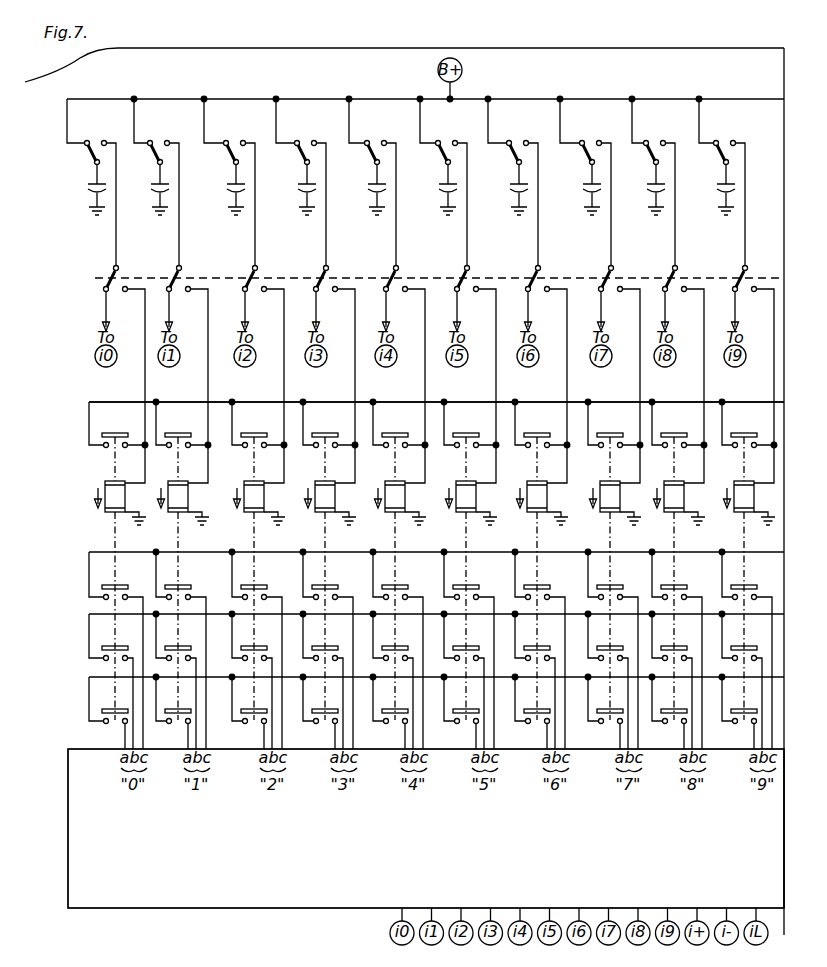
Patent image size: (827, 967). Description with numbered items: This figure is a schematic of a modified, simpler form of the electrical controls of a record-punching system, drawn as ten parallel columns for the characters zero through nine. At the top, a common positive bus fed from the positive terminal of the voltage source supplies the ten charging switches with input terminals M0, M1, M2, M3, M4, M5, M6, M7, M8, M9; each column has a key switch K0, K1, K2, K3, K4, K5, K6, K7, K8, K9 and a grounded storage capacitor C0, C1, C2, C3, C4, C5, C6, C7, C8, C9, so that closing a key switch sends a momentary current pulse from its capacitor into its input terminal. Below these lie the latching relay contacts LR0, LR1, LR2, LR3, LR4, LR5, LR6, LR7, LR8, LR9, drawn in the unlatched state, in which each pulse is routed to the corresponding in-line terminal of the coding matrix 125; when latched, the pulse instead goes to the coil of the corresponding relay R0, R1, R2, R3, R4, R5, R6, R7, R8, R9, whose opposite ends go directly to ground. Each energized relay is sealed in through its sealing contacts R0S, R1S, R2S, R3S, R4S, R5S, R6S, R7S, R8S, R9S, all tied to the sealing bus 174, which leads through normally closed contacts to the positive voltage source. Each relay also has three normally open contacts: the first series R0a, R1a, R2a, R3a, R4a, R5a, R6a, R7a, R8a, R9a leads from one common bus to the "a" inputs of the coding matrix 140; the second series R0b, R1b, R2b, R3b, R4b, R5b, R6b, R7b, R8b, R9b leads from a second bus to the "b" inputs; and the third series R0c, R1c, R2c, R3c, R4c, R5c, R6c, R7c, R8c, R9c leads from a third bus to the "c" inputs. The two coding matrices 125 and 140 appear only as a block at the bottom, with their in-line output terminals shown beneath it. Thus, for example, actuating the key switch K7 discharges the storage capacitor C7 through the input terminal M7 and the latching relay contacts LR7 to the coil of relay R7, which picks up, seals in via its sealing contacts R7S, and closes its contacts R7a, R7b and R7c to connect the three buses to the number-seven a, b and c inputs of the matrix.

The input terminal M0 is at (91, 182).
The input terminal M1 is at (155, 180).
The input terminal M2 is at (228, 180).
The input terminal M3 is at (299, 180).
The input terminal M4 is at (371, 180).
The input terminal M5 is at (442, 180).
The input terminal M6 is at (511, 180).
The input terminal M7 is at (584, 180).
The input terminal M8 is at (652, 180).
The input terminal M9 is at (720, 180).
The key switch K0 is at (68, 160).
The key switch K1 is at (137, 160).
The key switch K2 is at (213, 160).
The key switch K3 is at (284, 160).
The key switch K4 is at (354, 160).
The key switch K5 is at (425, 160).
The key switch K6 is at (496, 160).
The key switch K7 is at (569, 160).
The key switch K8 is at (633, 160).
The key switch K9 is at (703, 160).
The storage capacitor C0 is at (75, 190).
The storage capacitor C1 is at (143, 190).
The storage capacitor C2 is at (219, 190).
The storage capacitor C3 is at (290, 190).
The storage capacitor C4 is at (360, 190).
The storage capacitor C5 is at (431, 190).
The storage capacitor C6 is at (502, 190).
The storage capacitor C7 is at (575, 190).
The storage capacitor C8 is at (639, 190).
The storage capacitor C9 is at (709, 190).
The latching relay contacts LR0 is at (106, 366).
The latching relay contacts LR1 is at (170, 366).
The latching relay contacts LR2 is at (246, 366).
The latching relay contacts LR3 is at (317, 366).
The latching relay contacts LR4 is at (387, 366).
The latching relay contacts LR5 is at (458, 366).
The latching relay contacts LR6 is at (529, 366).
The latching relay contacts LR7 is at (602, 366).
The latching relay contacts LR8 is at (666, 366).
The latching relay contacts LR9 is at (736, 366).
The sealing contacts R0S is at (117, 425).
The sealing contacts R1S is at (180, 423).
The sealing contacts R2S is at (256, 423).
The sealing contacts R3S is at (327, 423).
The sealing contacts R4S is at (397, 423).
The sealing contacts R5S is at (468, 423).
The sealing contacts R6S is at (539, 423).
The sealing contacts R7S is at (612, 423).
The sealing contacts R8S is at (676, 423).
The sealing contacts R9S is at (746, 423).
The relay R0 is at (101, 506).
The relay R1 is at (175, 515).
The relay R2 is at (251, 515).
The relay R3 is at (322, 515).
The relay R4 is at (392, 515).
The relay R5 is at (463, 515).
The relay R6 is at (534, 515).
The relay R7 is at (607, 515).
The relay R8 is at (671, 515).
The relay R9 is at (741, 515).
The normally open relay contacts R0c is at (118, 650).
The normally open relay contacts R1c is at (182, 649).
The normally open relay contacts R2c is at (258, 649).
The normally open relay contacts R3c is at (329, 649).
The normally open relay contacts R4c is at (399, 649).
The normally open relay contacts R5c is at (470, 649).
The normally open relay contacts R6c is at (541, 649).
The normally open relay contacts R7c is at (614, 649).
The normally open relay contacts R8c is at (678, 649).
The normally open relay contacts R9c is at (748, 649).
The normally open relay contacts R0b is at (91, 681).
The normally open relay contacts R1b is at (173, 680).
The normally open relay contacts R2b is at (249, 680).
The normally open relay contacts R3b is at (320, 680).
The normally open relay contacts R4b is at (390, 680).
The normally open relay contacts R5b is at (461, 680).
The normally open relay contacts R6b is at (532, 680).
The normally open relay contacts R7b is at (605, 680).
The normally open relay contacts R8b is at (669, 680).
The normally open relay contacts R9b is at (739, 680).
The normally open relay contacts R0a is at (89, 713).
The normally open relay contacts R1a is at (171, 711).
The normally open relay contacts R2a is at (247, 711).
The normally open relay contacts R3a is at (318, 711).
The normally open relay contacts R4a is at (388, 711).
The normally open relay contacts R5a is at (459, 711).
The normally open relay contacts R6a is at (530, 711).
The normally open relay contacts R7a is at (603, 711).
The normally open relay contacts R8a is at (667, 711).
The normally open relay contacts R9a is at (737, 711).
The sealing bus 174 is at (127, 400).
The coding matrix 125 is at (426, 828).
The coding matrix 140 is at (426, 828).